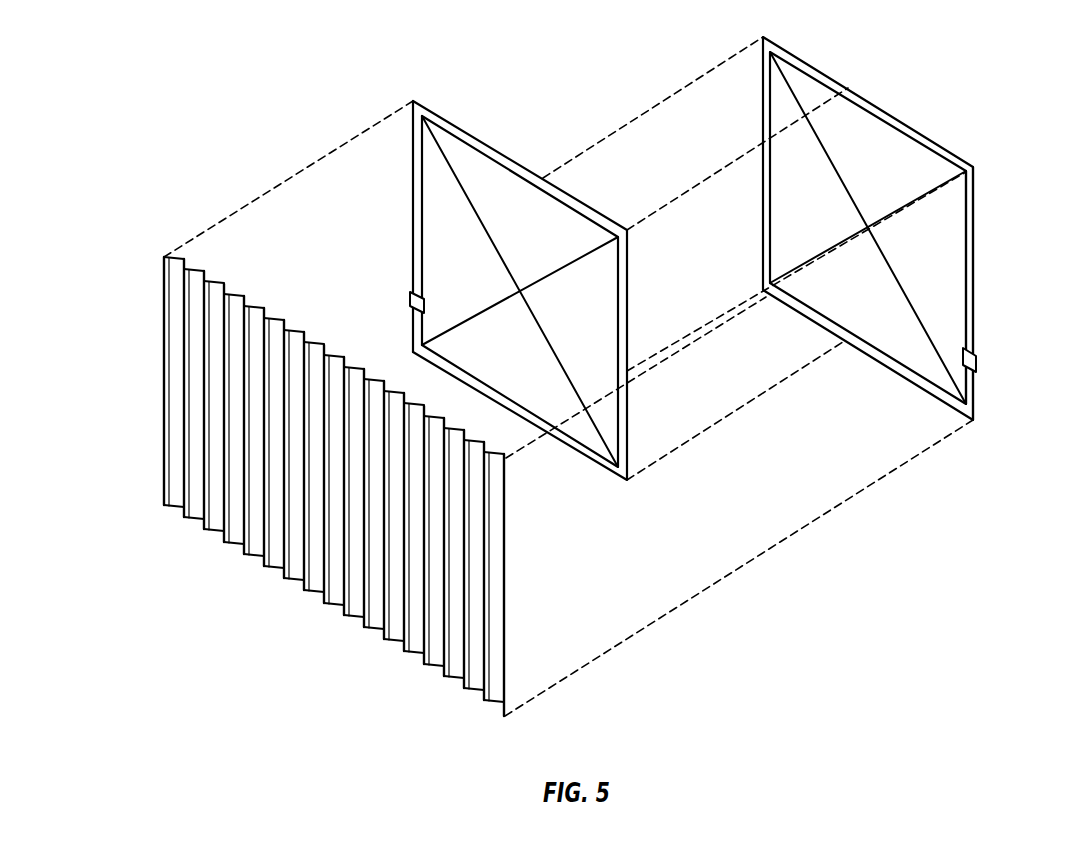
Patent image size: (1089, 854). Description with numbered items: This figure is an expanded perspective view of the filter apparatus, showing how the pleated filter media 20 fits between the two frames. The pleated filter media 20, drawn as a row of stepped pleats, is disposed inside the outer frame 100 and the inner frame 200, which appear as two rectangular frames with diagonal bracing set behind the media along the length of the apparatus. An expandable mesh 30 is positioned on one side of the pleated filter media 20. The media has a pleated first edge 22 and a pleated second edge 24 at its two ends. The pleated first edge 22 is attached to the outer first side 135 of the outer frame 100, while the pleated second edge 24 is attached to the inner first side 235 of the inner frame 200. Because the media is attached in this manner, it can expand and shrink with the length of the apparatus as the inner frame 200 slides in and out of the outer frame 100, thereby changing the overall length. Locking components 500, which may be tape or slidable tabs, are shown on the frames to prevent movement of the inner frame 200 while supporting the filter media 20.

The pleated filter media 20 is at (236, 618).
The pleated first edge 22 is at (507, 592).
The pleated second edge 24 is at (163, 356).
The expandable mesh 30 is at (364, 630).
The outer frame 100 is at (933, 142).
The outer first side 135 is at (975, 228).
The inner frame 200 is at (588, 206).
The inner first side 235 is at (413, 205).
The locking component 500 is at (409, 297).